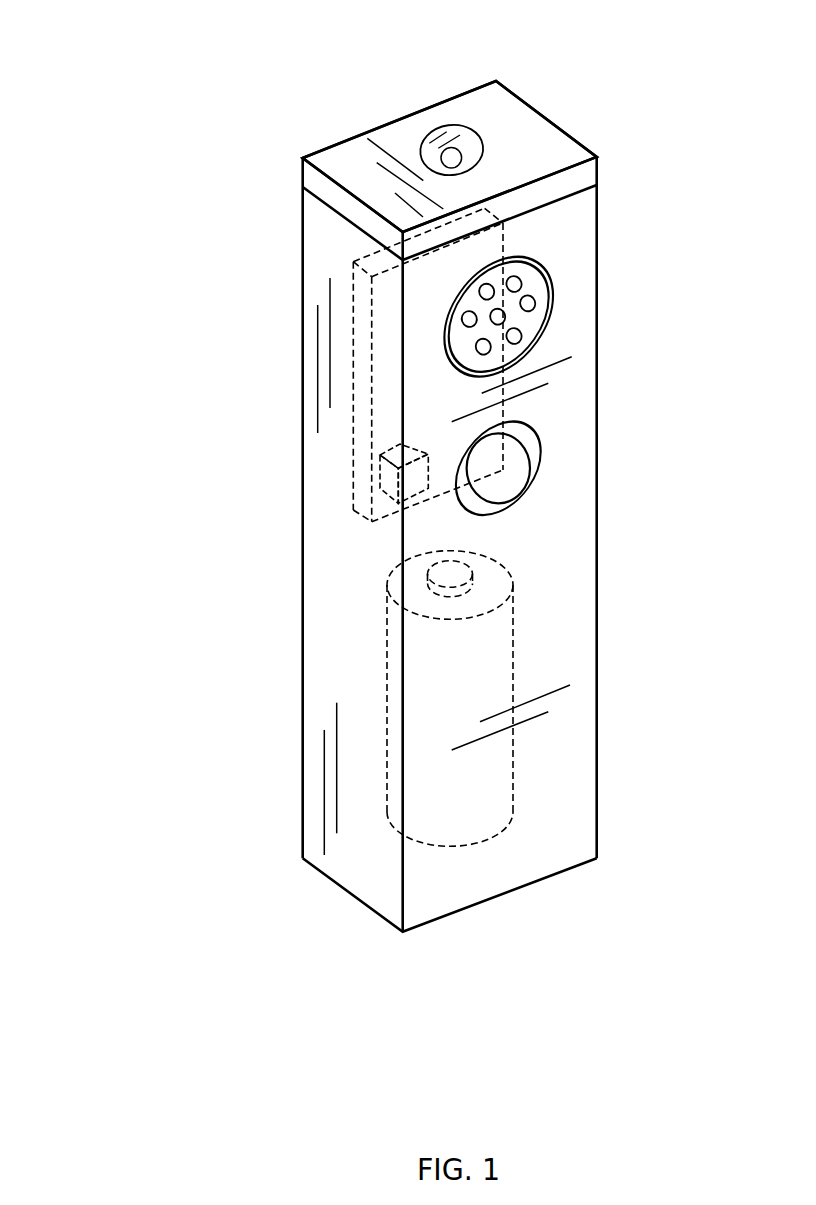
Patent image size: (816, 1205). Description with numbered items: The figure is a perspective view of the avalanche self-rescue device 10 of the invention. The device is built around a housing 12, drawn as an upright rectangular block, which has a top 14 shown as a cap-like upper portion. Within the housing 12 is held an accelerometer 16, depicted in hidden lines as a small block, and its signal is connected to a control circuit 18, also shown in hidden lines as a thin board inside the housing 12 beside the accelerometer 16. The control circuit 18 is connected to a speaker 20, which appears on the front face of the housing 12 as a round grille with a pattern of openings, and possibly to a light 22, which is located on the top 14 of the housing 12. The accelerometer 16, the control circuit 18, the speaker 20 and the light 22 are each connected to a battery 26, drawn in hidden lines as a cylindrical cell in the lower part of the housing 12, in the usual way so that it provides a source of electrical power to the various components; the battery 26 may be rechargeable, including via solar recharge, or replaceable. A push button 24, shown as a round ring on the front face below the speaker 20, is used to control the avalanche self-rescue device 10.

The avalanche self-rescue device 10 is at (140, 90).
The housing 12 is at (268, 714).
The top 14 is at (552, 146).
The accelerometer 16 is at (380, 480).
The control circuit 18 is at (353, 352).
The speaker 20 is at (542, 317).
The light 22 is at (453, 150).
The push button 24 is at (543, 472).
The battery 26 is at (513, 753).